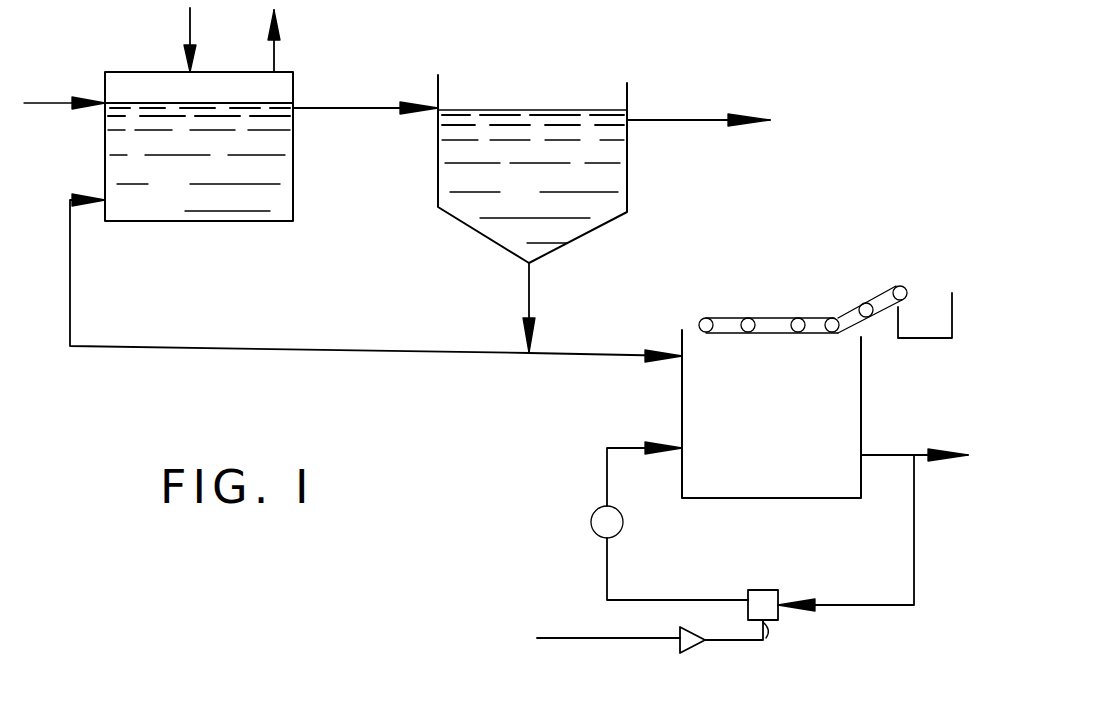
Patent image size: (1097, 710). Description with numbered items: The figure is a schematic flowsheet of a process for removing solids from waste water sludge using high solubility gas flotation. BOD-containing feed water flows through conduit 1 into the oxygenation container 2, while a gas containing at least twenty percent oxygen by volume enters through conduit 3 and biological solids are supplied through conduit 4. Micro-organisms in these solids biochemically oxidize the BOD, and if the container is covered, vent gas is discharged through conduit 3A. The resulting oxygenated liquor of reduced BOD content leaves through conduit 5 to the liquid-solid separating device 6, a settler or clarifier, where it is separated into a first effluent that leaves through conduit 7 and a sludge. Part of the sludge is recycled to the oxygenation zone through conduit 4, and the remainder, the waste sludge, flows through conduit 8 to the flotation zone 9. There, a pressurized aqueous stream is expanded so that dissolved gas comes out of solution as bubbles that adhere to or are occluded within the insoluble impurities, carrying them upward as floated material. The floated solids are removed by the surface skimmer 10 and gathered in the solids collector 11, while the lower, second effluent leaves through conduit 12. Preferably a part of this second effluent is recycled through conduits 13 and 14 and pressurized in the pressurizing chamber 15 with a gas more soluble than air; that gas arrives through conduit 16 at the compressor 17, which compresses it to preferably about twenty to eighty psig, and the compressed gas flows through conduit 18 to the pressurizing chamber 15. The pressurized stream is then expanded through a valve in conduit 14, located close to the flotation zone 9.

The conduit 1 is at (76, 100).
The oxygenation container 2 is at (147, 72).
The conduit 3 is at (190, 38).
The conduit 3A is at (275, 55).
The conduit 4 is at (186, 346).
The conduit 5 is at (345, 118).
The liquid-solid separating device 6 is at (630, 178).
The conduit 7 is at (700, 118).
The conduit 8 is at (570, 355).
The flotation zone 9 is at (681, 395).
The surface skimmer 10 is at (810, 318).
The solids collector 11 is at (958, 310).
The conduit 12 is at (884, 455).
The conduit 13 is at (912, 548).
The conduit 14 is at (604, 478).
The pressurizing chamber 15 is at (765, 590).
The conduit 16 is at (574, 638).
The compressor 17 is at (690, 652).
The conduit 18 is at (768, 640).